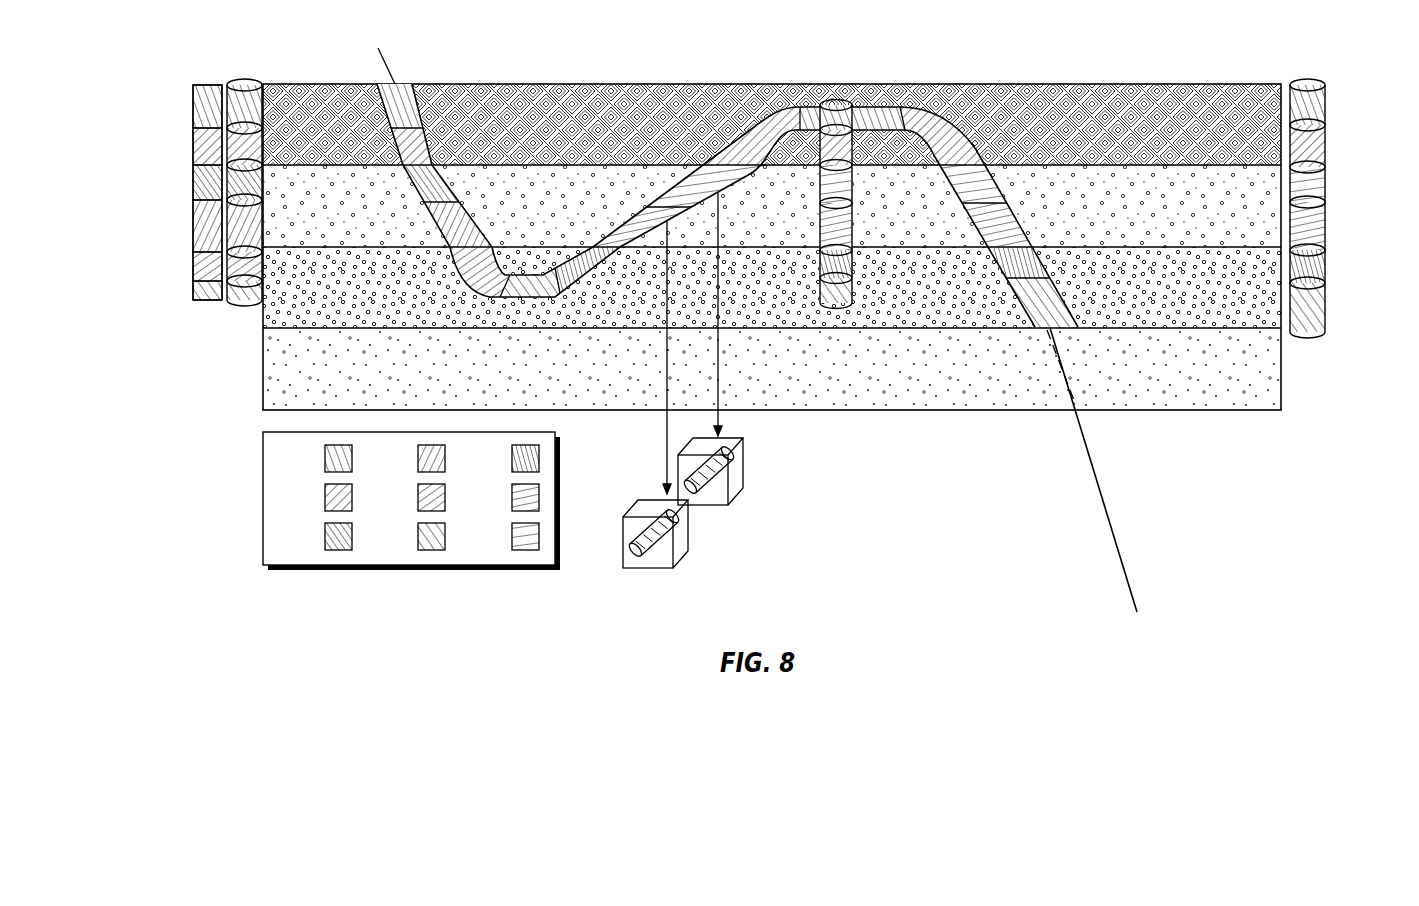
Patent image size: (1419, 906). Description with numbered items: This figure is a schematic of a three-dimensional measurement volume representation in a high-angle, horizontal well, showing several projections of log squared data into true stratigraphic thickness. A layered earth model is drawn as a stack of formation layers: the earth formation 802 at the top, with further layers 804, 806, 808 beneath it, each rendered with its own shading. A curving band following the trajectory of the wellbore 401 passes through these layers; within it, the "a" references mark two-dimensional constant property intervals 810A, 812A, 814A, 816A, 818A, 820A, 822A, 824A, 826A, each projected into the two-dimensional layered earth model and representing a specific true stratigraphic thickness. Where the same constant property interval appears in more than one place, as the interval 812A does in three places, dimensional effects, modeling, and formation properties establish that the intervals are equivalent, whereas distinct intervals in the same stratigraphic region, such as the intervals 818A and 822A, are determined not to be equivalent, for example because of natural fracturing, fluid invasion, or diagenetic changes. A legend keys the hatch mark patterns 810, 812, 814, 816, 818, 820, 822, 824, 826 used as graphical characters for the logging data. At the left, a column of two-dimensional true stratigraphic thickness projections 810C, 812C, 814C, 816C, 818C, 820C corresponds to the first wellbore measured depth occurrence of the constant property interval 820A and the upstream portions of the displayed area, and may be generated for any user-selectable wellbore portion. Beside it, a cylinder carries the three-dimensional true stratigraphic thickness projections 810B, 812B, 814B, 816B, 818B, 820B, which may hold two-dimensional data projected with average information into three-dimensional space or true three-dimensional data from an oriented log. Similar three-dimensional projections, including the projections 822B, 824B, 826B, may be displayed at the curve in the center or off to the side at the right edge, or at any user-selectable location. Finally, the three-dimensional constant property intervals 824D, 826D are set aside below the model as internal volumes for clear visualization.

The wellbore 401 is at (1105, 495).
The earth formation 802 is at (1192, 127).
The second formation layer 804 is at (1192, 224).
The third formation layer 806 is at (1192, 294).
The fourth formation layer 808 is at (1192, 386).
The first material legend 810 is at (317, 459).
The second material legend 812 is at (317, 498).
The third material legend 814 is at (317, 537).
The fourth material legend 816 is at (410, 459).
The fifth material legend 818 is at (410, 498).
The sixth material legend 820 is at (410, 537).
The seventh material legend 822 is at (503, 459).
The eighth material legend 824 is at (503, 498).
The ninth material legend 826 is at (503, 537).
The 2-D constant property interval 810A is at (398, 120).
The 2-D constant property interval 812A is at (417, 153).
The 2-D constant property interval 814A is at (432, 188).
The 2-D constant property interval 816A is at (452, 210).
The 2-D constant property interval 818A is at (475, 262).
The 2-D constant property interval 820A is at (528, 298).
The 2-D constant property interval 822A is at (592, 262).
The 2-D constant property interval 824A is at (632, 236).
The 2-D constant property interval 826A is at (688, 184).
The 3-D true stratigraphic thickness projection 810B is at (243, 113).
The 3-D true stratigraphic thickness projection 812B is at (243, 150).
The 3-D true stratigraphic thickness projection 814B is at (243, 178).
The 3-D true stratigraphic thickness projection 816B is at (243, 215).
The 3-D true stratigraphic thickness projection 818B is at (243, 262).
The 3-D true stratigraphic thickness projection 820B is at (243, 288).
The 3-D true stratigraphic thickness projection 822B is at (835, 260).
The 3-D true stratigraphic thickness projection 824B is at (1312, 228).
The ninth material core segment 826B is at (1312, 185).
The 2-D true stratigraphic thickness projection 810C is at (207, 110).
The 2-D true stratigraphic thickness projection 812C is at (207, 145).
The 2-D true stratigraphic thickness projection 814C is at (207, 182).
The 2-D true stratigraphic thickness projection 816C is at (207, 225).
The 2-D true stratigraphic thickness projection 818C is at (207, 268).
The 2-D true stratigraphic thickness projection 820C is at (207, 290).
The 3-D constant property interval 824D is at (672, 545).
The 3-D constant property interval 826D is at (723, 480).